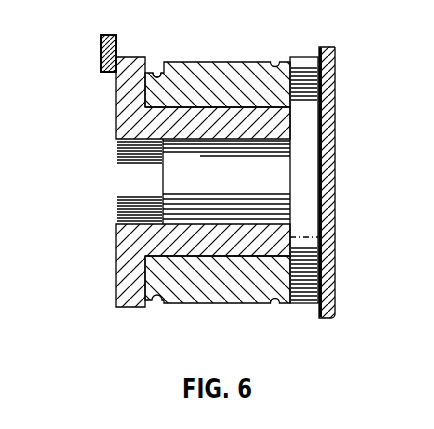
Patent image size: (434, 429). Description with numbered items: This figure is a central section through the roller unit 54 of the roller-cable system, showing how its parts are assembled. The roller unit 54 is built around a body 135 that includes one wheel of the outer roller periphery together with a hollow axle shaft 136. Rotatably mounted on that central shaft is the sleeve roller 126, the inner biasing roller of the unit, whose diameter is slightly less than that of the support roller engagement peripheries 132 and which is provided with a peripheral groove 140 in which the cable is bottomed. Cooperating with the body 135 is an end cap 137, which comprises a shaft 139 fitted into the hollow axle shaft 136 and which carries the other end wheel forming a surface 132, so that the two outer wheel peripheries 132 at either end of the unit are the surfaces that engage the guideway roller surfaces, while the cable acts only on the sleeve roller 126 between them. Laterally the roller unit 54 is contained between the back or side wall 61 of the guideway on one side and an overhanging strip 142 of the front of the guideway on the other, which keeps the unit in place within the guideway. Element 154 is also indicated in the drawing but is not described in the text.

The roller unit 54 is at (225, 32).
The back or side wall 61 is at (336, 240).
The sleeve roller 126 is at (220, 62).
The support roller engagement periphery 132 is at (303, 55).
The body 135 is at (107, 222).
The hollow axle shaft 136 is at (243, 250).
The end cap 137 is at (333, 103).
The shaft 139 is at (292, 152).
The peripheral groove 140 is at (158, 66).
The overhanging strip 142 is at (100, 46).
The shaft 154 is at (280, 181).